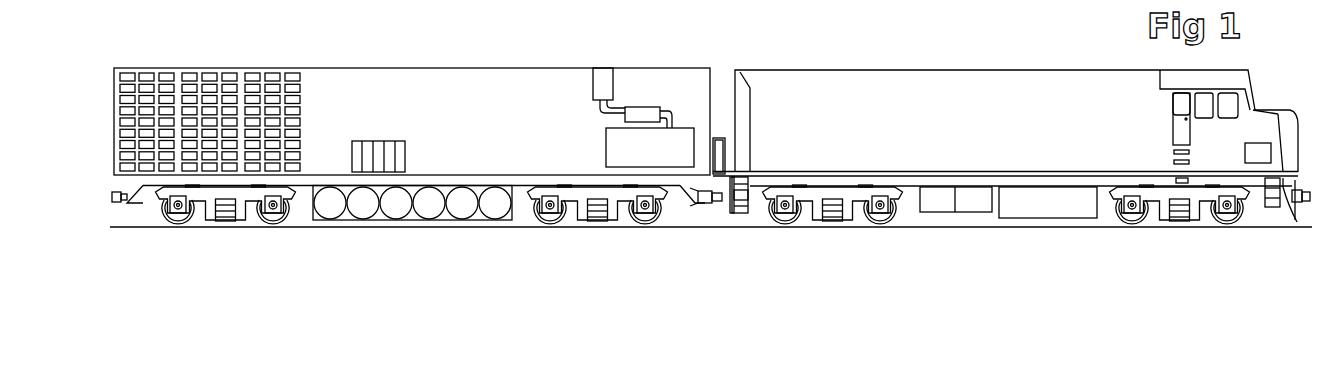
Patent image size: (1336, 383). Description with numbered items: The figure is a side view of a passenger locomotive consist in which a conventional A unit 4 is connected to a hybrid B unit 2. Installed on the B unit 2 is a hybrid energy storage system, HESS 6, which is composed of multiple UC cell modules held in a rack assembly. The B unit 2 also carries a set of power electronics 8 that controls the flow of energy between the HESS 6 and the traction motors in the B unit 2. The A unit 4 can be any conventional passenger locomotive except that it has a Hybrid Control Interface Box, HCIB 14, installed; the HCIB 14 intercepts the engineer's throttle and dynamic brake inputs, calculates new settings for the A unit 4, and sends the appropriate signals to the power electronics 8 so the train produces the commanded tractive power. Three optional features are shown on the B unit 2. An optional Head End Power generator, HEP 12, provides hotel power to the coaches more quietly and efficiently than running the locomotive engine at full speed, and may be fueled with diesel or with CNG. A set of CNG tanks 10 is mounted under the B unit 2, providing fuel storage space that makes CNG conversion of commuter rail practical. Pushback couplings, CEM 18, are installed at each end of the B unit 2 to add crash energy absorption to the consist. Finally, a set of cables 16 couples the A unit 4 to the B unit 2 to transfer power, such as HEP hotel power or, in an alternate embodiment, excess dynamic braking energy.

The B unit 2 is at (423, 53).
The A unit 4 is at (938, 55).
The hybrid energy storage system 6 is at (297, 77).
The power electronics 8 is at (403, 148).
The CNG tanks 10 is at (493, 203).
The head end power generator 12 is at (628, 143).
The hybrid control interface box 14 is at (1260, 157).
The cables 16 is at (733, 207).
The pushback couplings 18 is at (128, 197).